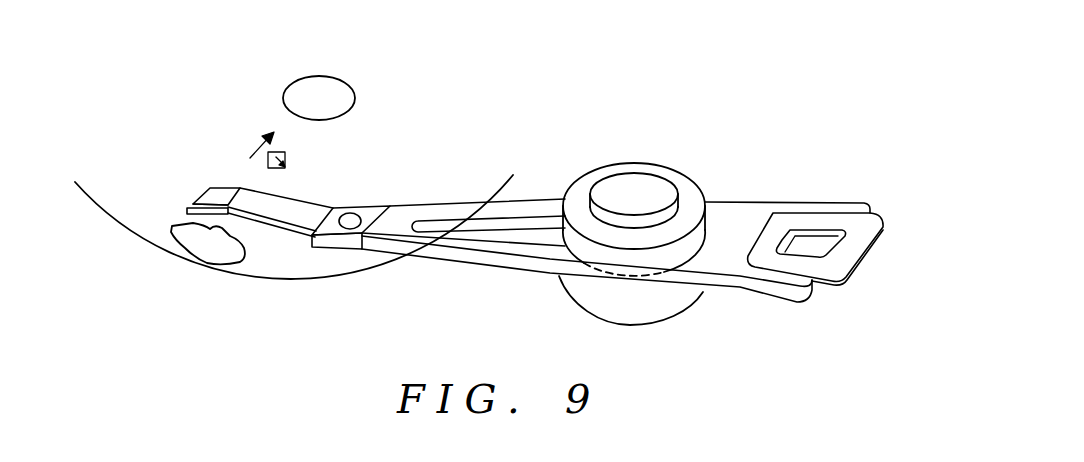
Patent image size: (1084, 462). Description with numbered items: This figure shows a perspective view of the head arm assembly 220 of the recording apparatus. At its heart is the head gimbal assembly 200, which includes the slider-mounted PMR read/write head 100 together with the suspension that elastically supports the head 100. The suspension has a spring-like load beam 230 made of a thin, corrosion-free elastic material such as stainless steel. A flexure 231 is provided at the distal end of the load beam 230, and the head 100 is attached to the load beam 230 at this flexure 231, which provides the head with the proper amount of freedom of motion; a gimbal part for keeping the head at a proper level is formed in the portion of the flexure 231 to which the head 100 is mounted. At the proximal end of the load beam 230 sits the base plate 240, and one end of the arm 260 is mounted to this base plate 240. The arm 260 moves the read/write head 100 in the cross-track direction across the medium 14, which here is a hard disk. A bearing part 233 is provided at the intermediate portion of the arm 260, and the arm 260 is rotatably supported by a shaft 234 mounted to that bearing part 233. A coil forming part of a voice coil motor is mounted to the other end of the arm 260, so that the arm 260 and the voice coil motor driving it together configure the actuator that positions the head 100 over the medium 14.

The medium 14 is at (186, 262).
The PMR read/write head 100 is at (207, 192).
The head gimbal assembly 200 is at (298, 256).
The head arm assembly 220 is at (495, 162).
The load beam 230 is at (311, 212).
The flexure 231 is at (192, 205).
The bearing part 233 is at (585, 182).
The shaft 234 is at (637, 183).
The base plate 240 is at (380, 208).
The arm 260 is at (453, 256).